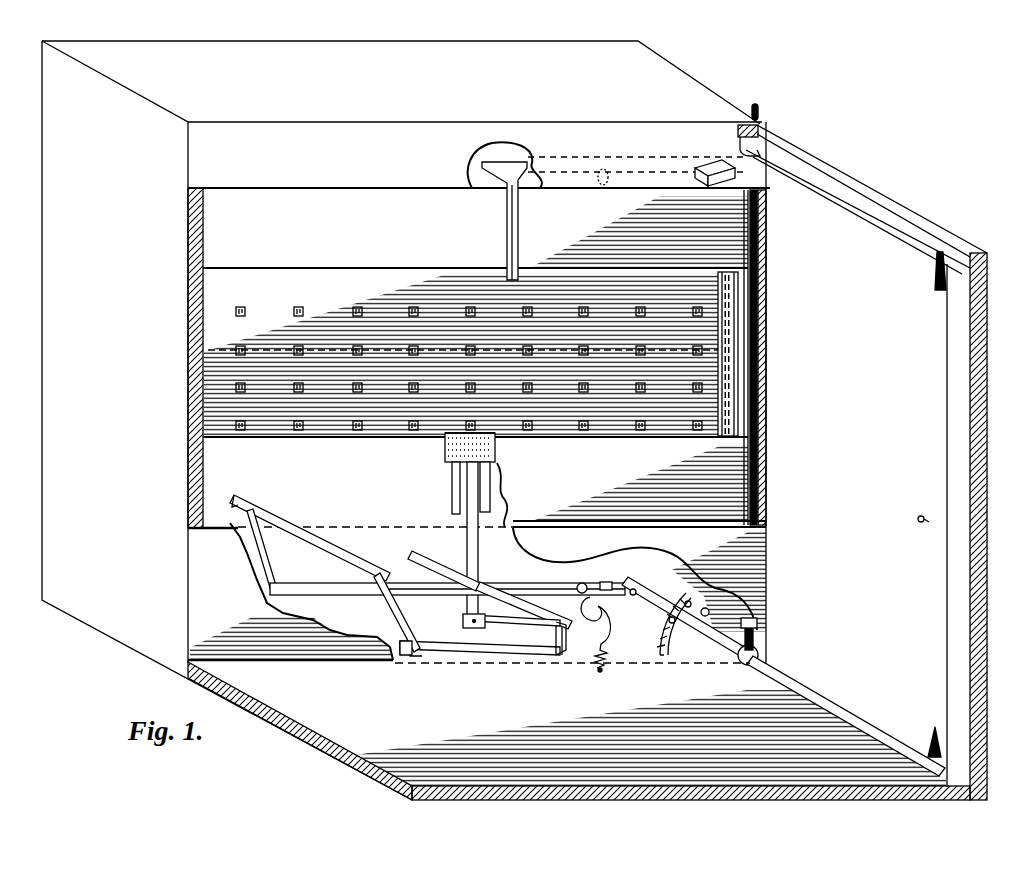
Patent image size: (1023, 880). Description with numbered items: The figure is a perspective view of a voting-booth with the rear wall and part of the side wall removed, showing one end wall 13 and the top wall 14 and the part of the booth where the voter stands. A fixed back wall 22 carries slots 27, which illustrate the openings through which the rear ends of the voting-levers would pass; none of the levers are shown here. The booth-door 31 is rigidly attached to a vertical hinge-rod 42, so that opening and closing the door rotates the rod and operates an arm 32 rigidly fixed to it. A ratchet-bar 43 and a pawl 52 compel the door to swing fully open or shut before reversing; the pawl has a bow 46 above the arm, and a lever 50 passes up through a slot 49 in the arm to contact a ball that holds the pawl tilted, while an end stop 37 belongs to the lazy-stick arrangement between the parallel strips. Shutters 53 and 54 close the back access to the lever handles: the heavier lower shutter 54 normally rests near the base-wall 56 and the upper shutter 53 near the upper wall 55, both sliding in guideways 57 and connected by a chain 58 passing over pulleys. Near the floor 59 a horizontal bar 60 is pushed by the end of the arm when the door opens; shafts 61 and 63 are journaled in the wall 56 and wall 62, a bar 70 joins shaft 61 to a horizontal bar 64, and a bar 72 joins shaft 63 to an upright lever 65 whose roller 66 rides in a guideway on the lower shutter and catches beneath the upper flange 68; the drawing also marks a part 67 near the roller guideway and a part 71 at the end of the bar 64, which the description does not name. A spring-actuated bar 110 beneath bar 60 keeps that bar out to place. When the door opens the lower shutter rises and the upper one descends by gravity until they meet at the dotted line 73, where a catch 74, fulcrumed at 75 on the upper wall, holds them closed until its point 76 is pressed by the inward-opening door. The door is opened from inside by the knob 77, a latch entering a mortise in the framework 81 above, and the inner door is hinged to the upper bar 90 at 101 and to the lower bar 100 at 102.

The end wall 13 is at (227, 420).
The top wall 14 is at (402, 82).
The back wall 22 is at (475, 355).
The slots 27 is at (296, 309).
The door 31 is at (895, 243).
The arm 32 is at (635, 602).
The end stop 37 is at (684, 604).
The hinge-rod 42 is at (758, 428).
The ratchet-bar 43 is at (666, 650).
The bow 46 is at (686, 617).
The slot 49 is at (683, 624).
The lever 50 is at (706, 612).
The pawl 52 is at (669, 621).
The upper shutter 53 is at (475, 232).
The lower shutter 54 is at (639, 484).
The upper wall 55 is at (479, 165).
The base-wall 56 is at (477, 590).
The guideways 57 is at (750, 388).
The chain 58 is at (740, 333).
The floor 59 is at (419, 634).
The horizontal bar 60 is at (306, 590).
The shaft 61 is at (352, 562).
The wall 62 is at (399, 505).
The shaft 63 is at (446, 563).
The horizontal bar 64 is at (270, 547).
The upright lever 65 is at (480, 556).
The roller 66 is at (492, 449).
The hanger 67 is at (455, 497).
The upper flange 68 is at (446, 452).
The bar 70 is at (386, 604).
The bracket 71 is at (556, 640).
The bar 72 is at (492, 620).
The dotted line 73 is at (216, 349).
The catch 74 is at (507, 238).
The fulcrum 75 is at (605, 170).
The point 76 is at (714, 170).
The knob 77 is at (921, 510).
The framework 81 is at (885, 198).
The upper bar 90 is at (856, 210).
The lower bar 100 is at (851, 708).
The upper hinge 101 is at (934, 256).
The lower hinge 102 is at (932, 745).
The spring-actuated bar 110 is at (603, 634).